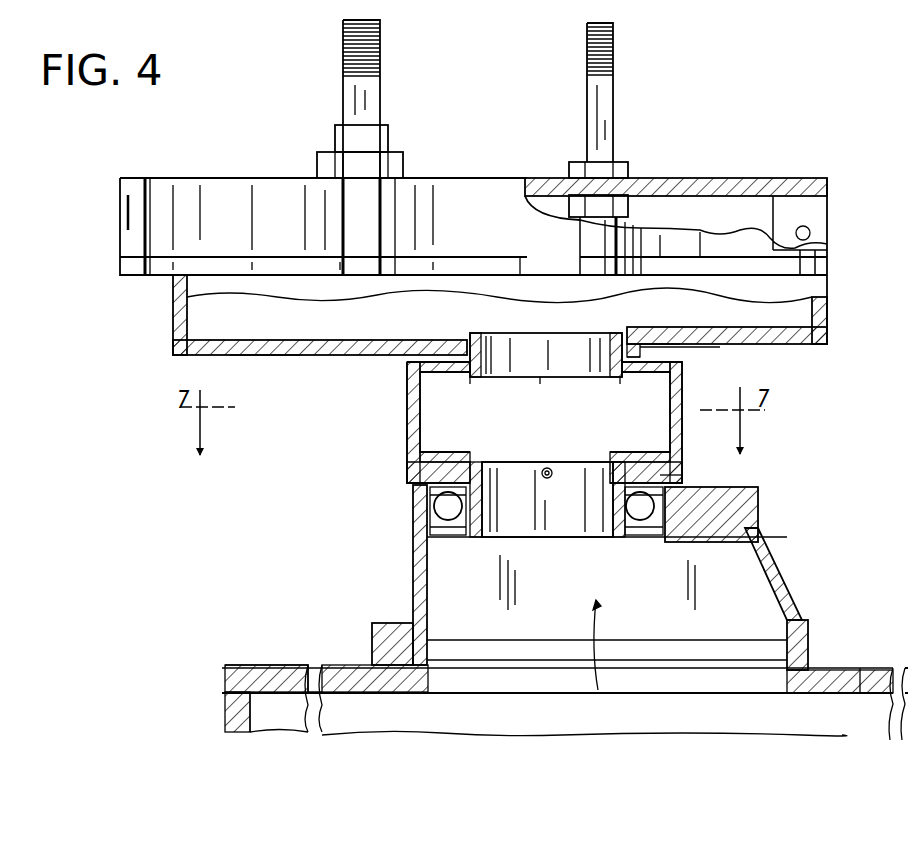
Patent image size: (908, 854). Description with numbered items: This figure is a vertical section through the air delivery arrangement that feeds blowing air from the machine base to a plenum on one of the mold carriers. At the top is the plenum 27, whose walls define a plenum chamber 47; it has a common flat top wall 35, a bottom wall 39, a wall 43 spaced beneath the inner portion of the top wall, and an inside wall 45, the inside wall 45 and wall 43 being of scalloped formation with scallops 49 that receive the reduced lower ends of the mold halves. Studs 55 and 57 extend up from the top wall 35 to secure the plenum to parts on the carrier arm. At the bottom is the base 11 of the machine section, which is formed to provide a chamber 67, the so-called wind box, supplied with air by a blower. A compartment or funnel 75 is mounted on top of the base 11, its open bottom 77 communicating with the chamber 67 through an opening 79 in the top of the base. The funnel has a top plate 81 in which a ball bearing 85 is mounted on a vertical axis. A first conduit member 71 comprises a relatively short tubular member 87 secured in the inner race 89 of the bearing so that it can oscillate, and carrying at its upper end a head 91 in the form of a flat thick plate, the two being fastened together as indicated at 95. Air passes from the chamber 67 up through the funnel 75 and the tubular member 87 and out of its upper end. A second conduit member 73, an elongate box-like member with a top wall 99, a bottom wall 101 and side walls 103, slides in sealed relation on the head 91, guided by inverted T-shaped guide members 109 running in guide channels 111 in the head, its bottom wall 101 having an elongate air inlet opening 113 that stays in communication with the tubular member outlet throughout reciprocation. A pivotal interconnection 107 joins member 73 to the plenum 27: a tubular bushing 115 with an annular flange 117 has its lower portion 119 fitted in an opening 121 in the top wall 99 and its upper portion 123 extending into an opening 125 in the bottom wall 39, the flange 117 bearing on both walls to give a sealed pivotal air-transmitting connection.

The base 11 is at (860, 668).
The plenum 27 is at (806, 173).
The top wall 35 is at (535, 180).
The bottom wall 39 is at (267, 358).
The wall 43 is at (130, 267).
The inside wall 45 is at (128, 208).
The plenum chamber 47 is at (731, 205).
The scallops 49 is at (236, 202).
The stud 55 is at (611, 89).
The stud 57 is at (380, 95).
The chamber 67 is at (630, 711).
The first conduit member 71 is at (475, 540).
The second conduit member 73 is at (404, 396).
The compartment 75 is at (780, 577).
The open bottom 77 is at (559, 628).
The opening 79 is at (735, 686).
The top plate 81 is at (758, 487).
The ball bearing 85 is at (432, 514).
The tubular member 87 is at (533, 537).
The inner race 89 is at (634, 537).
The head 91 is at (407, 477).
The fastening 95 is at (549, 477).
The top wall 99 is at (643, 356).
The bottom wall 101 is at (437, 462).
The side walls 103 is at (407, 434).
The pivotal interconnection 107 is at (468, 335).
The guide members 109 is at (456, 462).
The guide channels 111 is at (680, 477).
The air inlet opening 113 is at (533, 462).
The tubular bushing 115 is at (558, 328).
The flange 117 is at (620, 378).
The lower portion 119 is at (542, 379).
The opening 121 is at (465, 377).
The upper portion 123 is at (570, 333).
The opening 125 is at (640, 346).